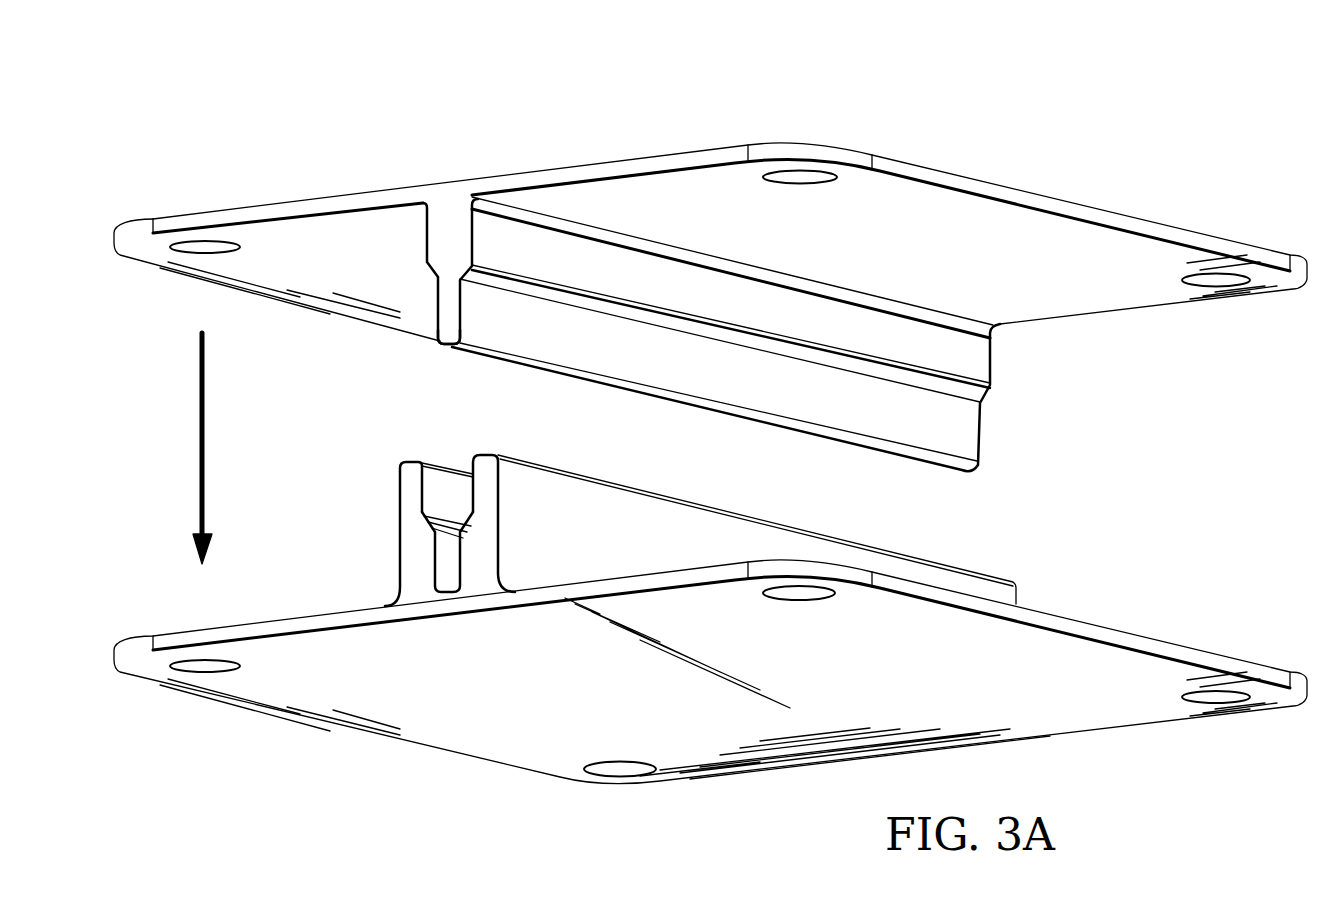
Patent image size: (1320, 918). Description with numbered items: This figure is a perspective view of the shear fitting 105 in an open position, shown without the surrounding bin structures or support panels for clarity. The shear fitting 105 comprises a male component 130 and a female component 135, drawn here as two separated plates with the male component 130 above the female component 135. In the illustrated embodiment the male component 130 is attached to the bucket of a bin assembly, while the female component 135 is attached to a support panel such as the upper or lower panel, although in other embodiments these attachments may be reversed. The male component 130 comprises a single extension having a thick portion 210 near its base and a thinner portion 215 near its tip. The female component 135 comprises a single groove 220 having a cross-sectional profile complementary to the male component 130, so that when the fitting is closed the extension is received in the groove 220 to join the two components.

The shear fitting 105 is at (710, 262).
The male component 130 is at (710, 280).
The female component 135 is at (710, 601).
The thick portion 210 is at (448, 225).
The thinner portion 215 is at (448, 321).
The groove 220 is at (448, 480).